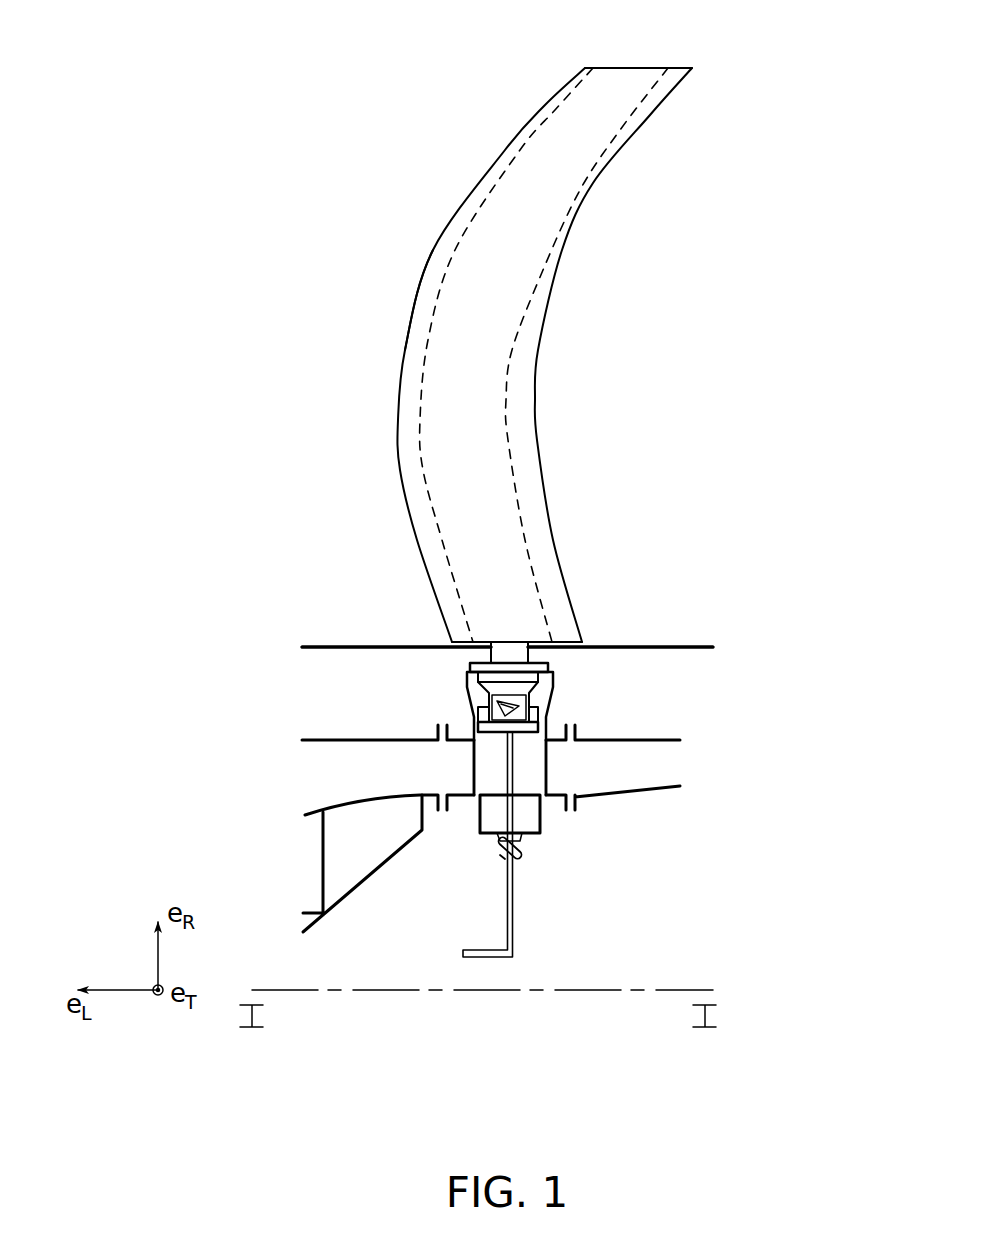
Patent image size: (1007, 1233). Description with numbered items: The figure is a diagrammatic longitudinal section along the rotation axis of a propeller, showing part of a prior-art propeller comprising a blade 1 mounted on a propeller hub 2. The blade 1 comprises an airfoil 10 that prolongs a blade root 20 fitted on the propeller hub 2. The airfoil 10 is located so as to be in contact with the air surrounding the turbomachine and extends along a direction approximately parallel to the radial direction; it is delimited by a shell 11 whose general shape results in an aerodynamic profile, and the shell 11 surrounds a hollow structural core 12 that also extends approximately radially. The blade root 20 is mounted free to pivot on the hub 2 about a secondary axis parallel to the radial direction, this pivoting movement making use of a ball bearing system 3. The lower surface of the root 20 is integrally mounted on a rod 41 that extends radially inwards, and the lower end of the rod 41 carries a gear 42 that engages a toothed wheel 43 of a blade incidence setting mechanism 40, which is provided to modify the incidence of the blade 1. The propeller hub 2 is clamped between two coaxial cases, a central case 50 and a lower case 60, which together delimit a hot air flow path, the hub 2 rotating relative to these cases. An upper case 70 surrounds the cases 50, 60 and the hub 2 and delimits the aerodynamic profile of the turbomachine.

The blade 1 is at (280, 287).
The airfoil 10 is at (636, 180).
The shell 11 is at (462, 204).
The hollow structural core 12 is at (518, 150).
The upper case 70 is at (688, 647).
The ball bearing system 3 is at (469, 680).
The blade root 20 is at (557, 692).
The propeller hub 2 is at (466, 765).
The central case 50 is at (655, 740).
The lower case 60 is at (660, 787).
The rod 41 is at (514, 812).
The blade incidence setting mechanism 40 is at (523, 916).
The gear 42 is at (520, 842).
The toothed wheel 43 is at (500, 855).